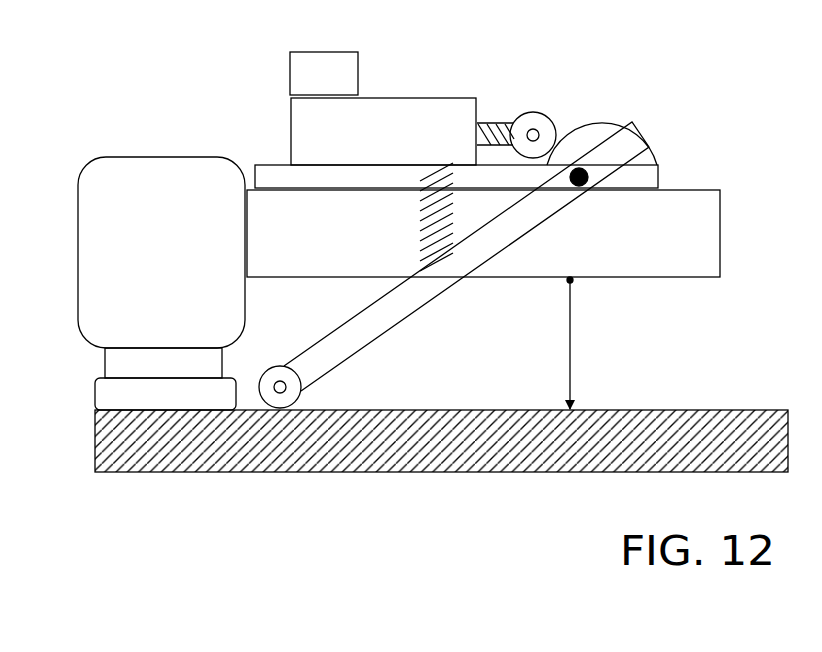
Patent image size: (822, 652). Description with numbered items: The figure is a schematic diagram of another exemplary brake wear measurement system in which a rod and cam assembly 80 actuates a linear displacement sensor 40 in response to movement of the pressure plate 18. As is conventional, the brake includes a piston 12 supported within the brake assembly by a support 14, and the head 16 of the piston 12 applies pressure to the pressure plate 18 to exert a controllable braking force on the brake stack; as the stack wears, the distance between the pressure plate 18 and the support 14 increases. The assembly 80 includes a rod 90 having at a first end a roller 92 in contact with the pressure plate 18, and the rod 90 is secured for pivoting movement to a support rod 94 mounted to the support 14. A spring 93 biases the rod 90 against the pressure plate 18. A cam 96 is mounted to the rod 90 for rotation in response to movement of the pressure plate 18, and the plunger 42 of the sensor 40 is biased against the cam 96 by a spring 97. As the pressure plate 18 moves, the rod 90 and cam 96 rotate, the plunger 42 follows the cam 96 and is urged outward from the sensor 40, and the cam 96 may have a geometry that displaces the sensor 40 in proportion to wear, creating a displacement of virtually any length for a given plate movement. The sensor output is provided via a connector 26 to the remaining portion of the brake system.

The piston 12 is at (175, 279).
The support 14 is at (697, 213).
The head 16 is at (108, 398).
The pressure plate 18 is at (165, 445).
The connector 26 is at (322, 67).
The linear displacement sensor 40 is at (405, 118).
The plunger 42 is at (500, 124).
The rod and cam assembly 80 is at (488, 292).
The rod 90 is at (352, 335).
The roller 92 is at (275, 372).
The spring 93 is at (428, 217).
The support rod 94 is at (275, 178).
The cam 96 is at (607, 130).
The spring 97 is at (493, 124).